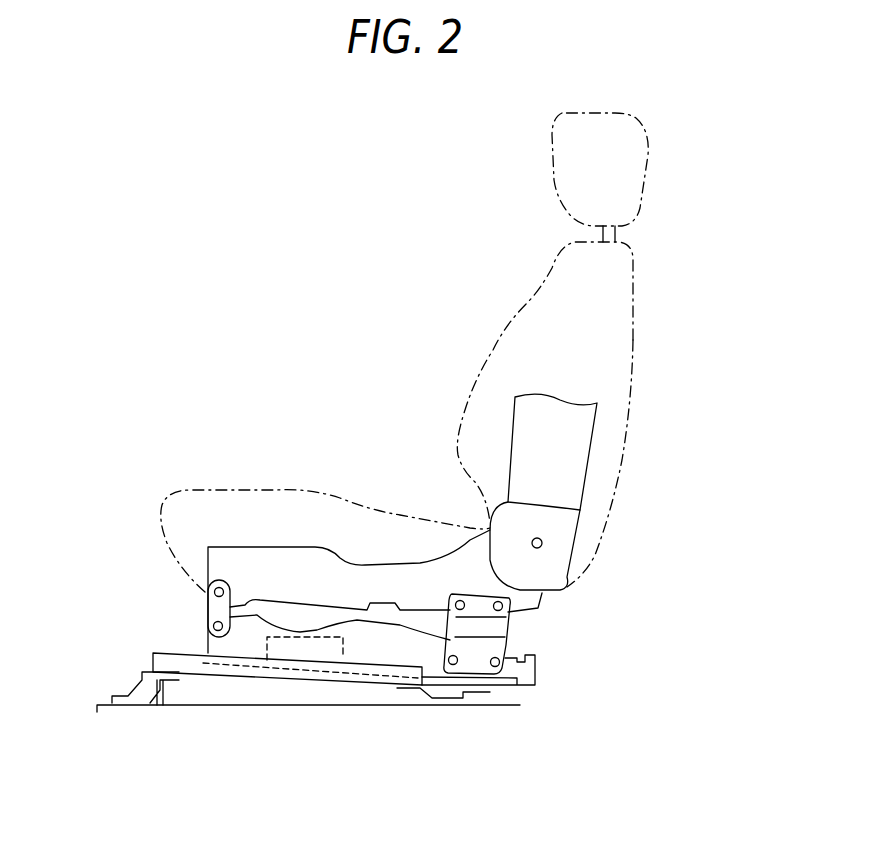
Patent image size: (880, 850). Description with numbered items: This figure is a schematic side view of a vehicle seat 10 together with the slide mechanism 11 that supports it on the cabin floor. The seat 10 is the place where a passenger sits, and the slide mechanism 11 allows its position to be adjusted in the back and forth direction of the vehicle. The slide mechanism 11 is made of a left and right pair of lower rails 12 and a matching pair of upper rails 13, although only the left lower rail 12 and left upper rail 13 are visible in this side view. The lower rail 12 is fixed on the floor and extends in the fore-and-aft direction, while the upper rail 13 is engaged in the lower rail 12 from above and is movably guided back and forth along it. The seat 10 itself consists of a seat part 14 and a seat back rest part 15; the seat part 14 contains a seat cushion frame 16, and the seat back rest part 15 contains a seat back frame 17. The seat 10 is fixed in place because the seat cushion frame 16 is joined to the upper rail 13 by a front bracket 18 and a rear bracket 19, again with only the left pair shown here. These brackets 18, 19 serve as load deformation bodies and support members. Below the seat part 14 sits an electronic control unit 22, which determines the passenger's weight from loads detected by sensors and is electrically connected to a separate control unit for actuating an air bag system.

The seat 10 is at (662, 278).
The slide mechanism 11 is at (146, 598).
The lower rail 12 is at (160, 652).
The upper rail 13 is at (517, 684).
The seat part 14 is at (218, 486).
The seat back rest part 15 is at (640, 334).
The seat cushion frame 16 is at (381, 570).
The seat back frame 17 is at (580, 455).
The front bracket 18 is at (230, 586).
The rear bracket 19 is at (503, 645).
The electronic control unit (ECU) 22 is at (350, 648).